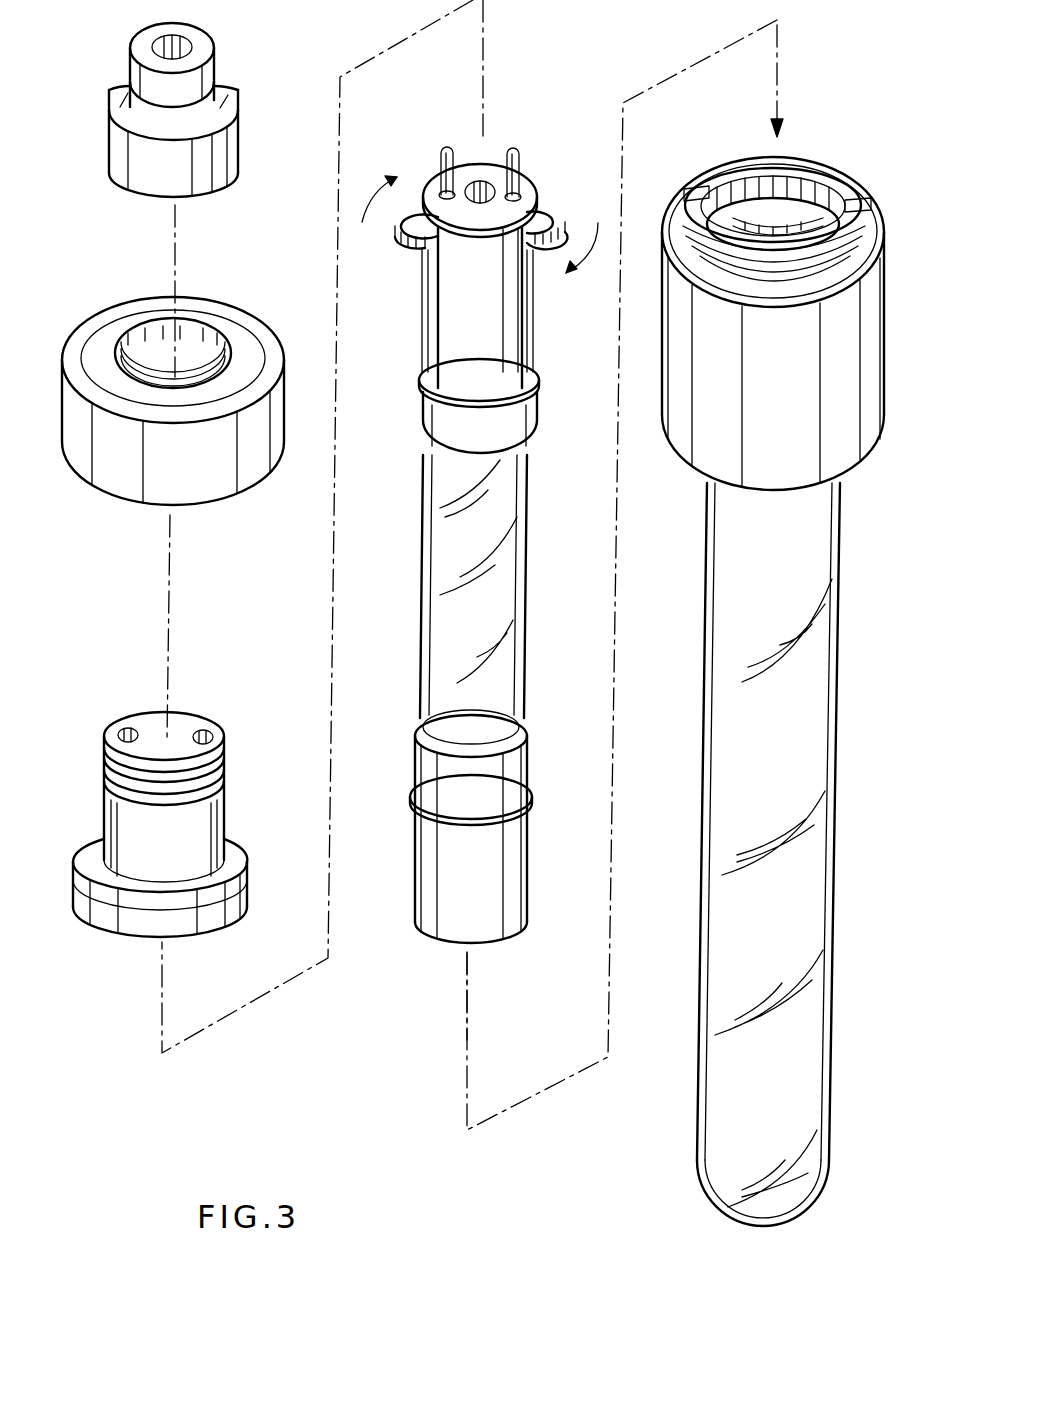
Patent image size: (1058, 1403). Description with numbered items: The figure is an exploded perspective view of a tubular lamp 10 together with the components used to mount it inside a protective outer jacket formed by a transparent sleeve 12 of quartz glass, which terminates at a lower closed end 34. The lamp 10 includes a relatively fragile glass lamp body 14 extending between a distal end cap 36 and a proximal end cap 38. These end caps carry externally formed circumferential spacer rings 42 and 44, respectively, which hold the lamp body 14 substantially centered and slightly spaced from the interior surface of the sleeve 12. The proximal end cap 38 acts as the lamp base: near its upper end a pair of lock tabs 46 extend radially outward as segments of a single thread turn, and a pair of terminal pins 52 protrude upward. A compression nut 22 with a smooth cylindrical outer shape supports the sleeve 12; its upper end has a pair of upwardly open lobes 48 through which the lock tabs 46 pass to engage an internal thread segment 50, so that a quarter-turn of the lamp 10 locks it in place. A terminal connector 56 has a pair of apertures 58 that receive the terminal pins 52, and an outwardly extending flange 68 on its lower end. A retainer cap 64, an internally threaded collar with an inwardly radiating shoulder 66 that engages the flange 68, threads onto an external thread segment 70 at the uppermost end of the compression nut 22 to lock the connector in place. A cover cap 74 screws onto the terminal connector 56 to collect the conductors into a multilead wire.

The tubular lamp 10 is at (428, 960).
The protective sleeve 12 is at (816, 671).
The glass lamp body 14 is at (505, 588).
The compression nut 22 is at (794, 306).
The closed end 34 is at (798, 1208).
The distal end cap 36 is at (508, 888).
The proximal end cap 38 is at (440, 318).
The spacer ring 42 is at (531, 790).
The spacer ring 44 is at (418, 383).
The lock tabs 46 is at (405, 222).
The lobes 48 is at (773, 173).
The internal thread segment 50 is at (823, 198).
The terminal pins 52 is at (446, 150).
The terminal connector 56 is at (125, 833).
The apertures 58 is at (128, 730).
The retainer cap 64 is at (84, 452).
The shoulder 66 is at (108, 330).
The flange 68 is at (130, 925).
The external thread segment 70 is at (785, 278).
The cover cap 74 is at (123, 96).